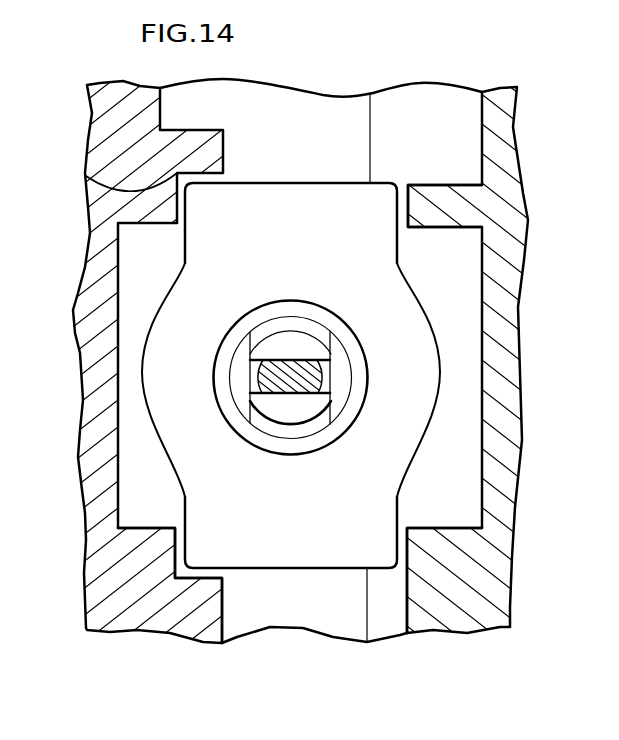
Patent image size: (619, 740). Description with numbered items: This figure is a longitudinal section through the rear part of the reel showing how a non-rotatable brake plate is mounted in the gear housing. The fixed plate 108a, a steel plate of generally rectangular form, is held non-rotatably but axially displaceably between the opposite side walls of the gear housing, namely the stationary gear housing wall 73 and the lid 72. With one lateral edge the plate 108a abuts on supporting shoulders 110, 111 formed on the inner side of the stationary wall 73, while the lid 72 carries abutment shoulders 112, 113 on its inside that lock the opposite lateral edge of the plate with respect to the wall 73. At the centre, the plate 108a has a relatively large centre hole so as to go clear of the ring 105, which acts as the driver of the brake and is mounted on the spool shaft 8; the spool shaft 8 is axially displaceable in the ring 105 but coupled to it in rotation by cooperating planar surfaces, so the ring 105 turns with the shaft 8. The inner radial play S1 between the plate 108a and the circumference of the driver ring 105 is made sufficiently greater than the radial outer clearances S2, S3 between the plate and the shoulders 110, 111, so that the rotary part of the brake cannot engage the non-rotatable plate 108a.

The stationary gear housing wall 73 is at (126, 123).
The supporting shoulder 110 is at (86, 176).
The supporting shoulder 111 is at (193, 613).
The lid 72 is at (504, 219).
The abutment shoulder 112 is at (432, 198).
The abutment shoulder 113 is at (428, 553).
The fixed plate 108a is at (337, 555).
The ring 105 is at (338, 346).
The spool shaft 8 is at (313, 378).
The inner radial play S1 is at (285, 447).
The radial outer clearance S2 is at (223, 573).
The radial outer clearance S3 is at (218, 173).